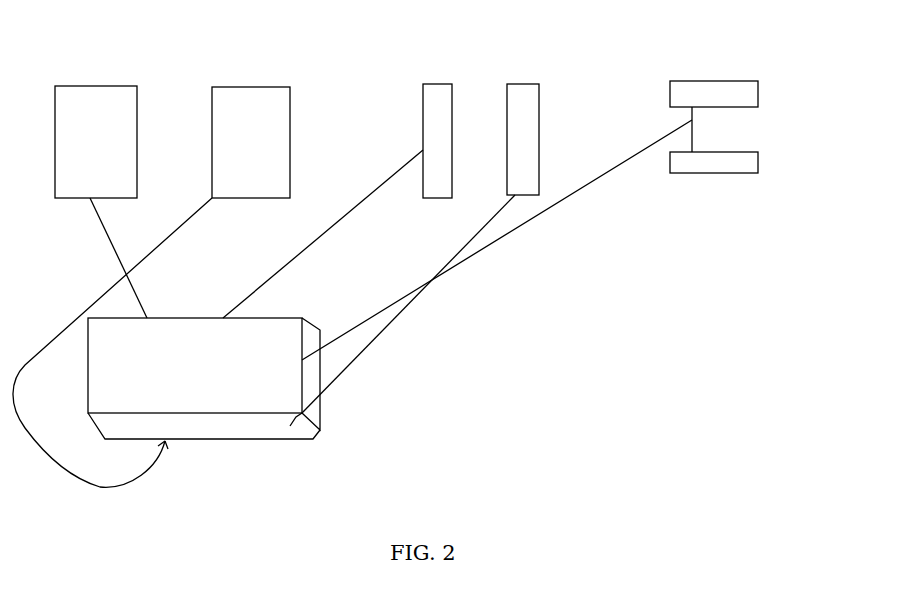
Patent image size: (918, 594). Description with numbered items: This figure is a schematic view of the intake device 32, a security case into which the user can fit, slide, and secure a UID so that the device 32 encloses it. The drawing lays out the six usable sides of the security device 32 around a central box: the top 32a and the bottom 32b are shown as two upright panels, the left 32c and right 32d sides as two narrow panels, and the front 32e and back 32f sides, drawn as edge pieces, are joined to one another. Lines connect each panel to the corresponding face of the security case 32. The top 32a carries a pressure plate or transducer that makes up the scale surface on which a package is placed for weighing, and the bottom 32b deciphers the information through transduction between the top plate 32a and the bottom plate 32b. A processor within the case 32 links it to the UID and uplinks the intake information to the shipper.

The intake device 32 is at (320, 415).
The top 32a is at (90, 86).
The bottom 32b is at (280, 87).
The left side 32c is at (450, 84).
The right side 32d is at (539, 100).
The front side 32e is at (758, 95).
The back side 32f is at (759, 167).